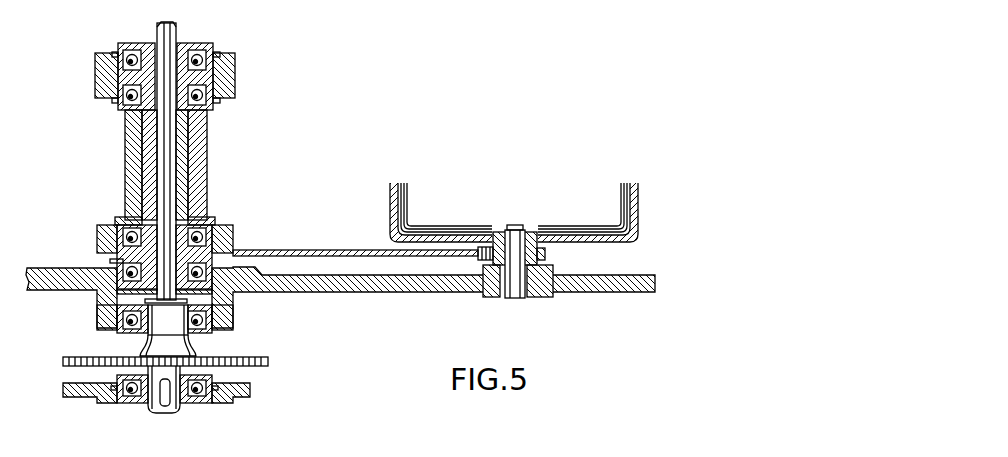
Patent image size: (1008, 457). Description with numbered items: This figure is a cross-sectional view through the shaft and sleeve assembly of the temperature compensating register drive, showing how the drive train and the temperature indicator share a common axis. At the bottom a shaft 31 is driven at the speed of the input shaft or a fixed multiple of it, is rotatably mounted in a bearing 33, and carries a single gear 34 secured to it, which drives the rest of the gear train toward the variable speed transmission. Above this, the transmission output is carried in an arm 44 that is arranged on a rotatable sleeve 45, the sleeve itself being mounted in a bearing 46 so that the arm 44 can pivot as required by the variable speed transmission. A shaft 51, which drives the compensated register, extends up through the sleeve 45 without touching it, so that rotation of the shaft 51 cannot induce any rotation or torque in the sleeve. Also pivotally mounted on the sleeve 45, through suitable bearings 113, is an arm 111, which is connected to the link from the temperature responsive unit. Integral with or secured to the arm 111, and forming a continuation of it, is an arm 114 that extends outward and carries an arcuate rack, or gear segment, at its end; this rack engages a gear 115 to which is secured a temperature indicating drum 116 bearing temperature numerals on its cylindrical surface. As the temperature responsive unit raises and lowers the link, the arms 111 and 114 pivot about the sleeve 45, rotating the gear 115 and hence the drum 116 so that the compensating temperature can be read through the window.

The shaft 31 is at (180, 412).
The bearing 33 is at (212, 342).
The gear 34 is at (260, 357).
The arm 44 is at (208, 190).
The rotatable sleeve 45 is at (192, 165).
The bearing 46 is at (98, 262).
The shaft 51 is at (140, 165).
The arm 111 is at (115, 228).
The bearings 113 is at (100, 228).
The arm 114 is at (337, 250).
The gear 115 is at (546, 255).
The drum 116 is at (640, 200).